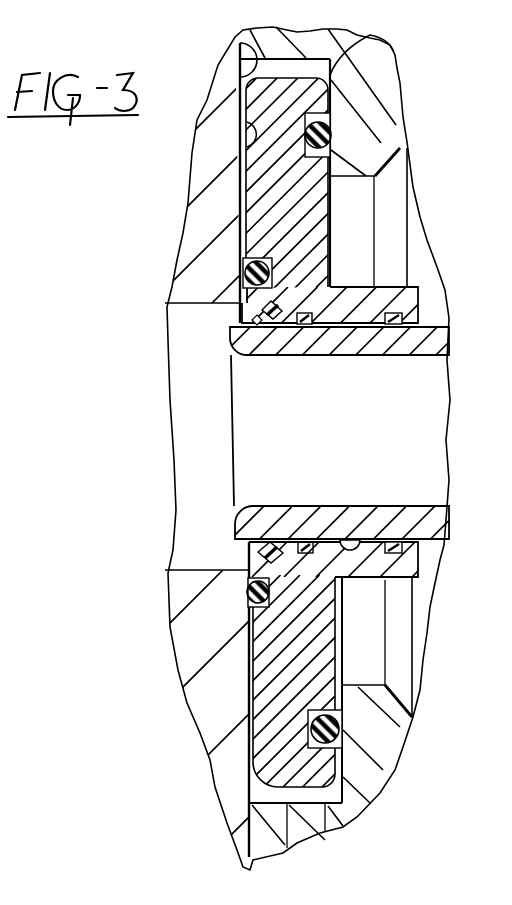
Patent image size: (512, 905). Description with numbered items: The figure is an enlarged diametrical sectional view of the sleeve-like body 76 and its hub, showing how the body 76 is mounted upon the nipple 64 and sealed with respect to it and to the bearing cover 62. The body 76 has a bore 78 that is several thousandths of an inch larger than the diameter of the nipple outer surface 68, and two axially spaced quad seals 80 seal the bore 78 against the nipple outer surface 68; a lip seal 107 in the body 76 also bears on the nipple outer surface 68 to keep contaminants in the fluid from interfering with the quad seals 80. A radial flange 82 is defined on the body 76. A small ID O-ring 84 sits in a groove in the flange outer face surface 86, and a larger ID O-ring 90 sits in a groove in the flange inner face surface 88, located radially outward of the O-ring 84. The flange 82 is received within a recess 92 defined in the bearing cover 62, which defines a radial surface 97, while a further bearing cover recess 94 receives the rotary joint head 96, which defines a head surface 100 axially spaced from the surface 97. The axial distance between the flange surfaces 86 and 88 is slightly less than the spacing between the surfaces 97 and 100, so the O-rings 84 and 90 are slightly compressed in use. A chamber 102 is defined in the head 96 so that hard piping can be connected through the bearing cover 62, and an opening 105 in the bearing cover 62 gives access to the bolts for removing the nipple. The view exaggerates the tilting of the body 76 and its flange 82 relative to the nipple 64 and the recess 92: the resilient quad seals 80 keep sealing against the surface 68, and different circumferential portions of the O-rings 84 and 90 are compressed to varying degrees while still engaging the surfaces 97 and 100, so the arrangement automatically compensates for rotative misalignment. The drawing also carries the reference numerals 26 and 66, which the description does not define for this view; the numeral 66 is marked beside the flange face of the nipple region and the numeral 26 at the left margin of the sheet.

The seal assembly 26 is at (17, 362).
The bearing cover 62 is at (367, 142).
The nipple 64 is at (422, 520).
The flange face 66 is at (407, 355).
The nipple outer surface 68 is at (447, 320).
The body 76 is at (335, 308).
The bore 78 is at (342, 538).
The quad seals 80 is at (393, 323).
The radial flange 82 is at (288, 95).
The small ID O-ring 84 is at (250, 273).
The flange outer face surface 86 is at (257, 147).
The flange inner face surface 88 is at (332, 202).
The larger ID O-ring 90 is at (342, 731).
The recess 92 is at (248, 790).
The bearing cover recess 94 is at (240, 78).
The rotary joint head 96 is at (200, 235).
The radial surface 97 is at (403, 83).
The head surface 100 is at (248, 704).
The chamber 102 is at (203, 463).
The opening 105 is at (368, 682).
The lip seal 107 is at (268, 355).